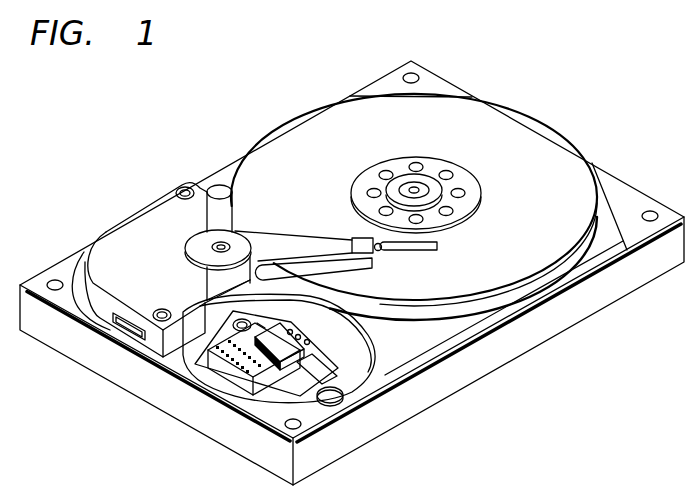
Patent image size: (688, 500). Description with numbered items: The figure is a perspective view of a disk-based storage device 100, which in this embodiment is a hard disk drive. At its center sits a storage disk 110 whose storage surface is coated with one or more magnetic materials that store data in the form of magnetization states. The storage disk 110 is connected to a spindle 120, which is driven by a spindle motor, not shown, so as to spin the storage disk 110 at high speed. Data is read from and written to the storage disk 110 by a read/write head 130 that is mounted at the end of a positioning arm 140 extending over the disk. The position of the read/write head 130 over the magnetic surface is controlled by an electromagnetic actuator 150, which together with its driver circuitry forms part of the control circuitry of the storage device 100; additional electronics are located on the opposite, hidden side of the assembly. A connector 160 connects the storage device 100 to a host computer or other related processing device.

The disk-based storage device 100 is at (141, 107).
The storage disk 110 is at (524, 129).
The spindle 120 is at (432, 187).
The read/write head 130 is at (405, 243).
The positioning arm 140 is at (283, 233).
The electromagnetic actuator 150 is at (126, 236).
The connector 160 is at (236, 373).